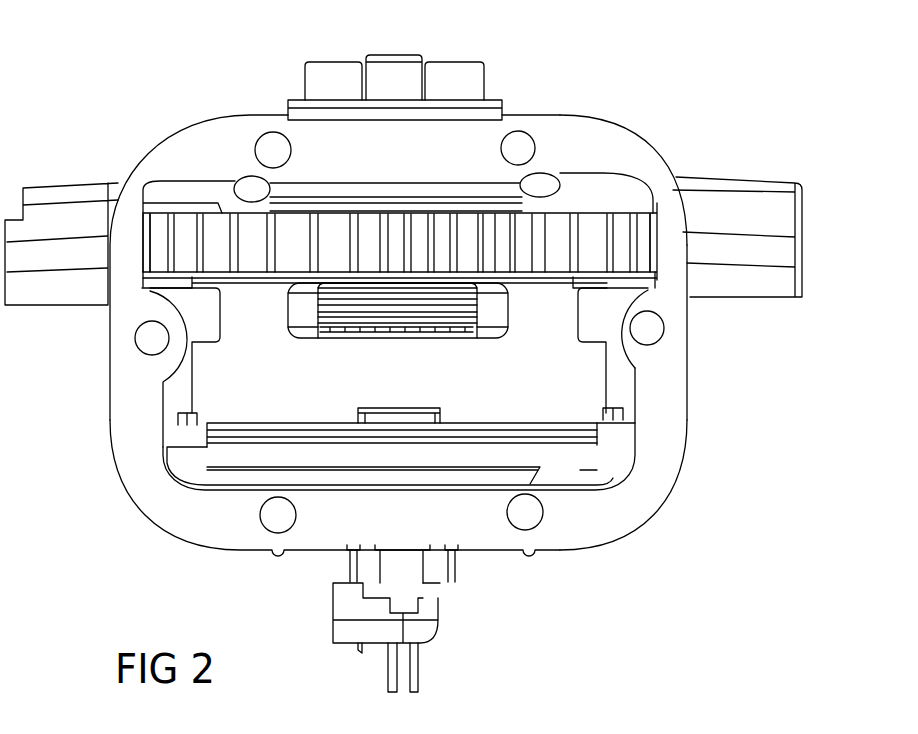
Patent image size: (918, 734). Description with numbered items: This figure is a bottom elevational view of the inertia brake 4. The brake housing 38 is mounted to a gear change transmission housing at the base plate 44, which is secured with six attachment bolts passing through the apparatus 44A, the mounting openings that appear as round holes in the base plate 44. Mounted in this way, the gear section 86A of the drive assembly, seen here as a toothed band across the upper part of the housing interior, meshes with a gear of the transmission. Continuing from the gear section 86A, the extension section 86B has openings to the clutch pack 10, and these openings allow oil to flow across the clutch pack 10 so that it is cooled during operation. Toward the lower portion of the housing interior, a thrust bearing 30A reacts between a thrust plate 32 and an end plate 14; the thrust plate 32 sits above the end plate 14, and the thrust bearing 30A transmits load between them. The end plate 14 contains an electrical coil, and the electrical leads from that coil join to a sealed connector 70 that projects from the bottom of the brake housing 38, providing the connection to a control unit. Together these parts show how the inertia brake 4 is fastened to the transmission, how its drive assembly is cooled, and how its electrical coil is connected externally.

The inertia brake 4 is at (662, 539).
The clutch pack 10 is at (300, 309).
The end plate 14 is at (578, 453).
The thrust bearing 30A is at (190, 436).
The thrust plate 32 is at (597, 425).
The brake housing 38 is at (610, 142).
The base plate 44 is at (176, 148).
The attachment bolt apparatus 44A is at (265, 150).
The sealed connector 70 is at (427, 627).
The gear section 86A is at (623, 227).
The extension section 86B is at (583, 370).